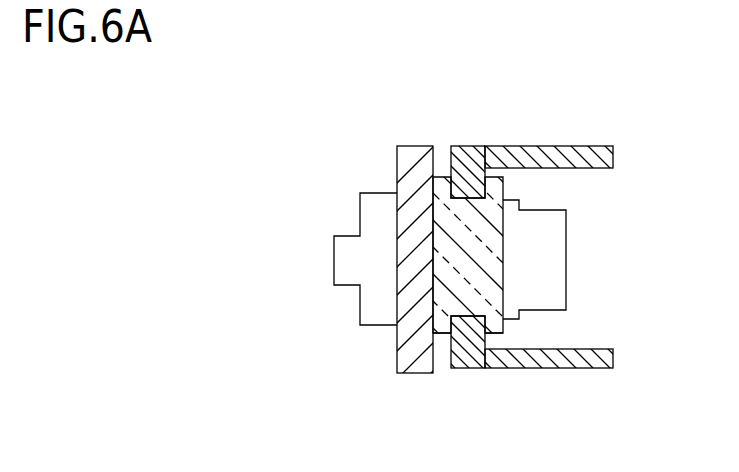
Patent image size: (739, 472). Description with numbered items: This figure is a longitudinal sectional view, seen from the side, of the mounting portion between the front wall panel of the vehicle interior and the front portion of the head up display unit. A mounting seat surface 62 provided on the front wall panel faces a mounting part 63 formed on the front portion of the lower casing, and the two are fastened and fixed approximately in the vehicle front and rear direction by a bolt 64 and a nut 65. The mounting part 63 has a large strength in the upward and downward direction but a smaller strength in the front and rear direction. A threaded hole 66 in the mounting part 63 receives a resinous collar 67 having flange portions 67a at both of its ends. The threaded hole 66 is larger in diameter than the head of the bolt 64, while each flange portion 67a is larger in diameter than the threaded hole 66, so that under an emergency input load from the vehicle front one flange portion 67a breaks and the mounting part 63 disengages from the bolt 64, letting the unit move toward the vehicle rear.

The mounting seat surface 62 is at (415, 147).
The mounting part 63 is at (593, 147).
The bolt 64 is at (566, 283).
The nut 65 is at (375, 325).
The threaded hole 66 is at (470, 200).
The resinous collar 67 is at (503, 192).
The flange portion 67a is at (497, 335).